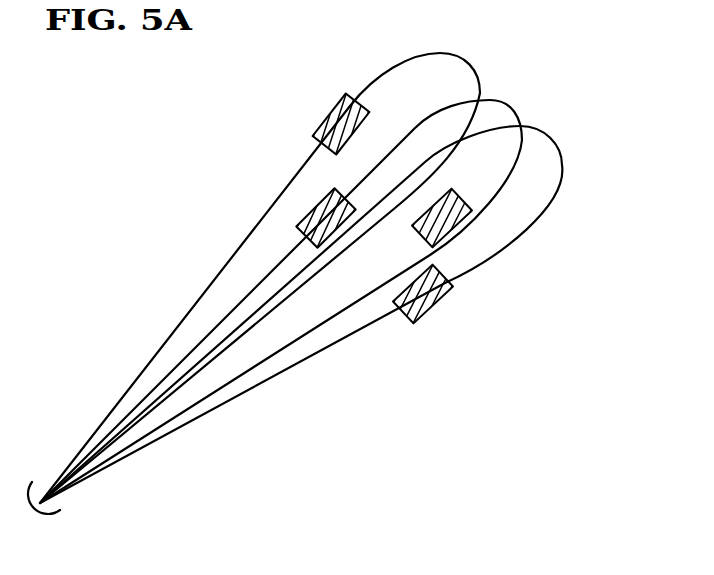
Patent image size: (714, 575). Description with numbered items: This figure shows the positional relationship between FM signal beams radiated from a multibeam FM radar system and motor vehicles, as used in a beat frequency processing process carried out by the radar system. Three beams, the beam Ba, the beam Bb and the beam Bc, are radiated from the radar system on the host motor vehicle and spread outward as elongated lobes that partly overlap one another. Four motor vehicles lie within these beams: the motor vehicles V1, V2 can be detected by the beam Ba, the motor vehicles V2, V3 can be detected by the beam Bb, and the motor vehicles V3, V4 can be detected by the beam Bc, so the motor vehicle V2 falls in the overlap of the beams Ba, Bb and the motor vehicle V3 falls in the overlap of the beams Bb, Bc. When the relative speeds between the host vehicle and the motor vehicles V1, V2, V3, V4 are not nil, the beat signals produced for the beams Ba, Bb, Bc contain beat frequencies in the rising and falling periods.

The beam Ba is at (463, 60).
The beam Bb is at (510, 107).
The beam Bc is at (562, 150).
The motor vehicle V1 is at (340, 115).
The motor vehicle V2 is at (320, 208).
The motor vehicle V3 is at (460, 222).
The motor vehicle V4 is at (437, 303).